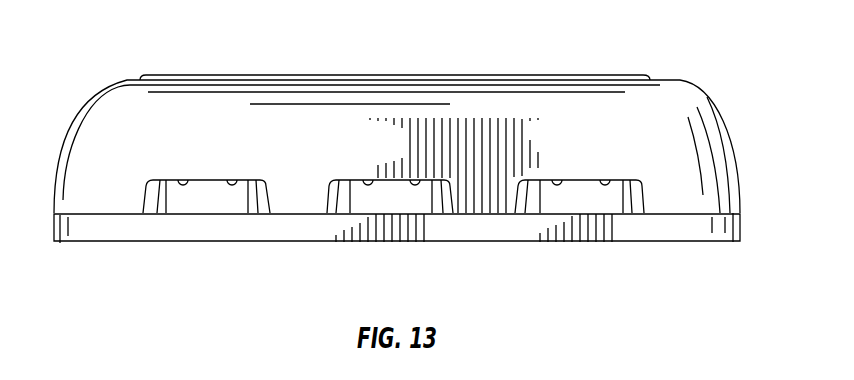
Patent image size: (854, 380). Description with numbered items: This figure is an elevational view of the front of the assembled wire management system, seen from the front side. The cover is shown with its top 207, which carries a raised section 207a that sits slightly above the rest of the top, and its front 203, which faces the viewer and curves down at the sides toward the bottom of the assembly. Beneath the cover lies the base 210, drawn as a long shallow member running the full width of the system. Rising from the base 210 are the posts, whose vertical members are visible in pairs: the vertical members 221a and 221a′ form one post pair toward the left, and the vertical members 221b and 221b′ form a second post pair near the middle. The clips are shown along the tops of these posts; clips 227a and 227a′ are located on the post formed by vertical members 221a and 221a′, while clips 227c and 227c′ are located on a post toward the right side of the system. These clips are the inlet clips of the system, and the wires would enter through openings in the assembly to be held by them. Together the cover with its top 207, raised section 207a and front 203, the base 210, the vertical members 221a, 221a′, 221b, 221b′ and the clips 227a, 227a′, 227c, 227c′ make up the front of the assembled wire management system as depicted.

The front 203 is at (658, 102).
The top 207 is at (128, 79).
The raised section 207a is at (240, 78).
The base 210 is at (675, 228).
The vertical member 221a is at (160, 206).
The vertical member 221a′ is at (257, 207).
The vertical member 221b is at (347, 203).
The vertical member 221b′ is at (440, 205).
The clip 227a is at (183, 186).
The clip 227a′ is at (232, 186).
The clip 227c is at (557, 186).
The clip 227c′ is at (605, 186).